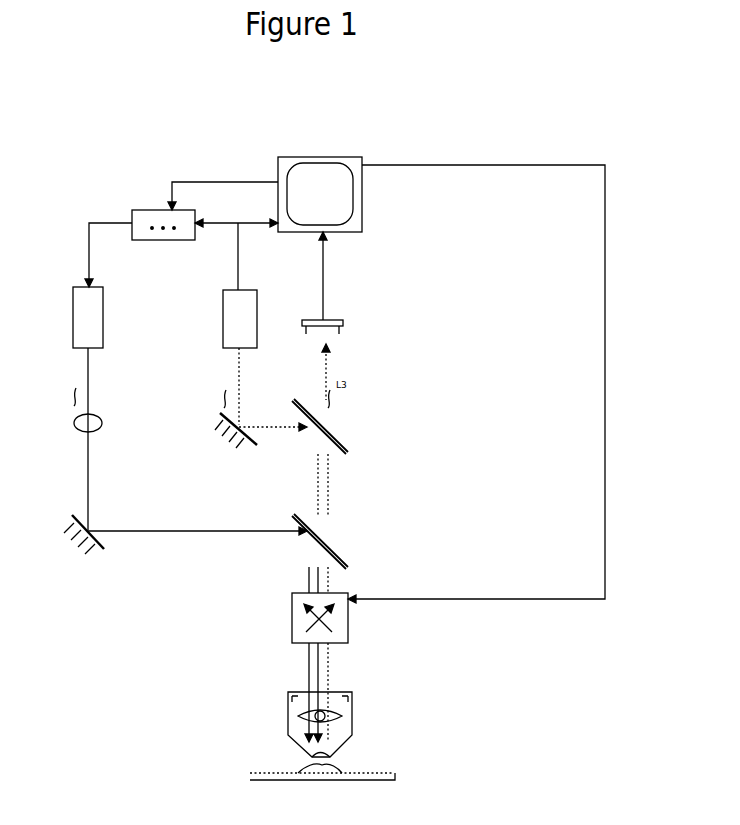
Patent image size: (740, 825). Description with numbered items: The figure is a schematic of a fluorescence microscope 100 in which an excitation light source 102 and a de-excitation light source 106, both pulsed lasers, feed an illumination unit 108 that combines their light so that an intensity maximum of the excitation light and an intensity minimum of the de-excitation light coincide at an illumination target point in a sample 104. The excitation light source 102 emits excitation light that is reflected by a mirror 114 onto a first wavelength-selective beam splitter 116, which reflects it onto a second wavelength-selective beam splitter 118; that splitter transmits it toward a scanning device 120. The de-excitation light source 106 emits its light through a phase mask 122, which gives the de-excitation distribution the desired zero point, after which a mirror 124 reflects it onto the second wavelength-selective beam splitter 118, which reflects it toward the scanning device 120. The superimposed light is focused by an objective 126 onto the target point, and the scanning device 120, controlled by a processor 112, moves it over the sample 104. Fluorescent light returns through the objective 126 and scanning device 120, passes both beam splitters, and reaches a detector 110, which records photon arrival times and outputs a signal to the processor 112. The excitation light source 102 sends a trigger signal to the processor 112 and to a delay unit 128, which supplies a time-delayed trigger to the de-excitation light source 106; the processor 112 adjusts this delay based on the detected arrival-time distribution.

The fluorescence microscope 100 is at (512, 128).
The excitation light source 102 is at (222, 318).
The sample 104 is at (340, 768).
The de-excitation light source 106 is at (72, 310).
The illumination unit 108 is at (203, 598).
The detector 110 is at (350, 330).
The processor 112 is at (363, 215).
The mirror 114 is at (258, 440).
The first wavelength-selective beam splitter 116 is at (345, 440).
The second wavelength-selective beam splitter 118 is at (345, 545).
The scanning device 120 is at (350, 630).
The phase mask 122 is at (74, 432).
The mirror 124 is at (95, 525).
The objective 126 is at (345, 738).
The delay unit 128 is at (160, 205).